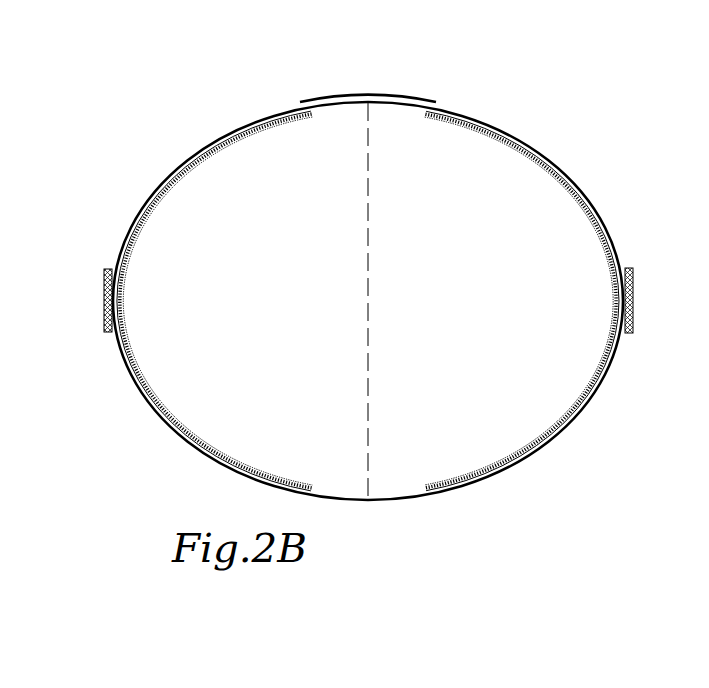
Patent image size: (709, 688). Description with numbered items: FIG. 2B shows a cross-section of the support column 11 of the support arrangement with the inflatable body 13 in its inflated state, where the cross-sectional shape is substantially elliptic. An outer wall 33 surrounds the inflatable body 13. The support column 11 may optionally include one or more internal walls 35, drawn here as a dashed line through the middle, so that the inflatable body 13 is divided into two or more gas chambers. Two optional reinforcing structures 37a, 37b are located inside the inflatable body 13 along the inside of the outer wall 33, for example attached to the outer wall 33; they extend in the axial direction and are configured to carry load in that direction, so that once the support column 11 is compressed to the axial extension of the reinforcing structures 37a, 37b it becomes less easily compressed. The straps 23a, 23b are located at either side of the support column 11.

The support column 11 is at (589, 100).
The inflatable body 13 is at (455, 313).
The outer wall 33 is at (338, 101).
The internal wall 35 is at (368, 393).
The reinforcing structure 37a is at (178, 185).
The reinforcing structure 37b is at (538, 165).
The strap 23a is at (105, 307).
The strap 23b is at (633, 312).